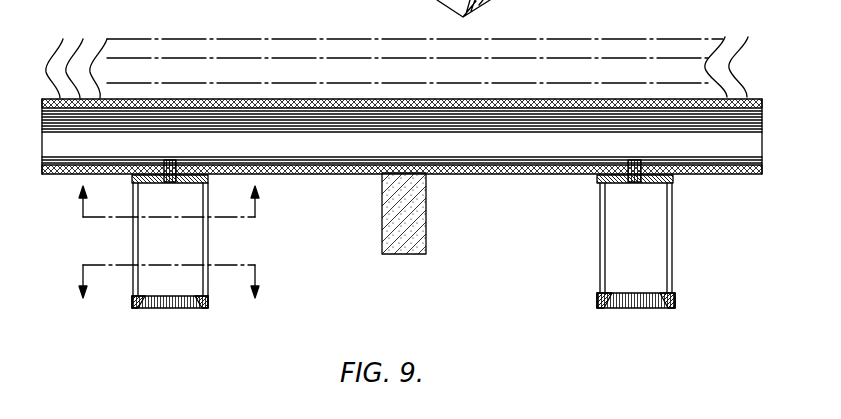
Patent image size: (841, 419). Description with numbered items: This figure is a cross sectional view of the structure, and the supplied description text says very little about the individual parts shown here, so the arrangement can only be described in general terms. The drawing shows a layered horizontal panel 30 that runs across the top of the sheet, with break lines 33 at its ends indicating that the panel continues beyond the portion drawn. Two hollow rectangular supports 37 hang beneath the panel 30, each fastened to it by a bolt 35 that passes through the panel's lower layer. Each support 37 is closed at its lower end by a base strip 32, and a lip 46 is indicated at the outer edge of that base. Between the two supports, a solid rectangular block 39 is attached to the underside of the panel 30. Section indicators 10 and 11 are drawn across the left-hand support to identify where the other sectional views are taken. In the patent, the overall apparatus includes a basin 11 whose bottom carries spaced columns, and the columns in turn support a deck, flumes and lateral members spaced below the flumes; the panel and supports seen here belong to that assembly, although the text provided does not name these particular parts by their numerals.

The roof panel structure (broken away) 33 is at (86, 38).
The roof deck panel 30 is at (459, 173).
The fastener bolt 35 is at (172, 170).
The channel leg 37 is at (208, 240).
The base strip 32 is at (163, 309).
The retaining lip 46 is at (132, 304).
The spacer block 39 is at (382, 219).
The section line 10- 10 is at (169, 200).
The basin 11 is at (169, 282).